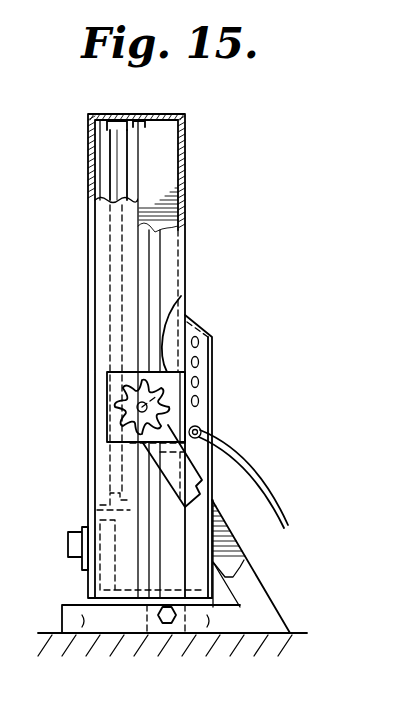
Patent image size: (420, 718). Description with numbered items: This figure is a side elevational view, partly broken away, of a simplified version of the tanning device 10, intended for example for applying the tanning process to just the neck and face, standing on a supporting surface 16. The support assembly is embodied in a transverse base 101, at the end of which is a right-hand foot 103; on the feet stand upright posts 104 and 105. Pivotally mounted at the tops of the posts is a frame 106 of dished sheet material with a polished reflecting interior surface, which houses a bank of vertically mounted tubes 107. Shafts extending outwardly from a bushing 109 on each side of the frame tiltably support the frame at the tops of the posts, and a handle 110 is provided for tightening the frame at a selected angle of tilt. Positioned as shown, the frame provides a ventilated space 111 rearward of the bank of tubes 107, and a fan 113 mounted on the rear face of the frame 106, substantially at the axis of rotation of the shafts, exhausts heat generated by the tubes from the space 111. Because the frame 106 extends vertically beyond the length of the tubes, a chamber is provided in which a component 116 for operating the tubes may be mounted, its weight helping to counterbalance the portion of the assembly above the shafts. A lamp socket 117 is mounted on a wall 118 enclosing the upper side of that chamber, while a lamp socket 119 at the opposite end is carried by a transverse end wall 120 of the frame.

The lifting device 10 is at (154, 382).
The support surface 16 is at (240, 628).
The transverse base 101 is at (205, 615).
The right-hand foot 103 is at (83, 615).
The upright post 104 is at (262, 486).
The upright post 105 is at (250, 592).
The frame 106 is at (185, 132).
The tubes 107 is at (113, 182).
The bushing 109 is at (178, 300).
The handle 110 is at (165, 420).
The ventilated space 111 is at (164, 172).
The fan 113 is at (217, 353).
The component 116 is at (103, 565).
The lamp socket 117 is at (110, 493).
The wall 118 is at (90, 508).
The lamp socket 119 is at (112, 118).
The transverse end wall 120 is at (130, 115).